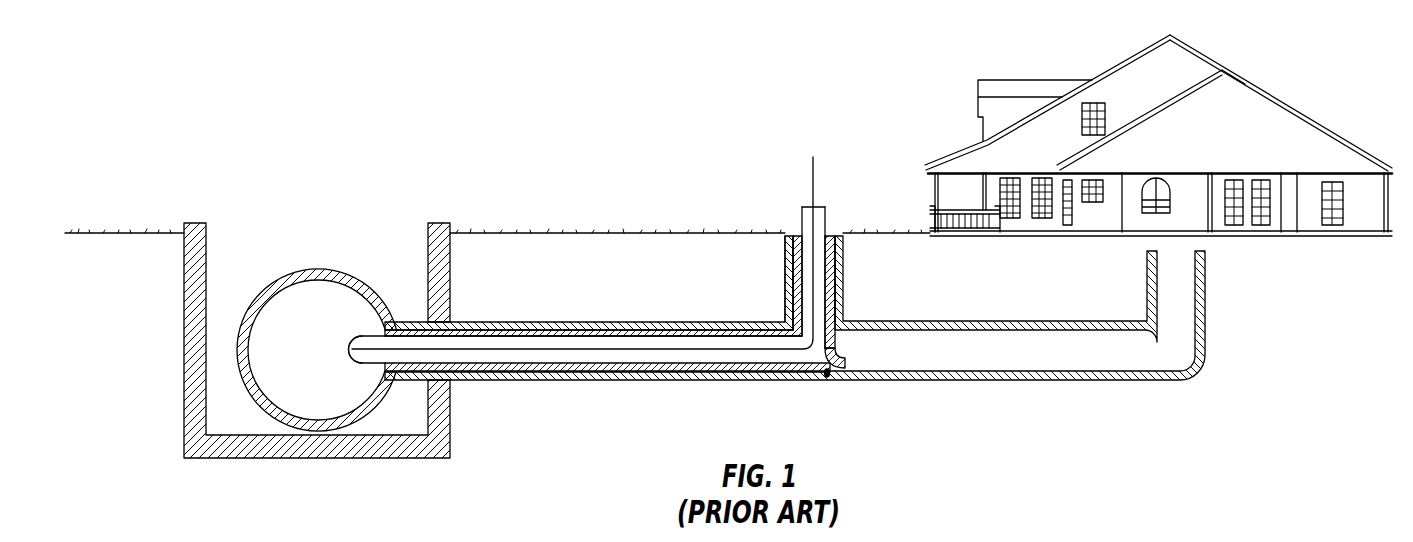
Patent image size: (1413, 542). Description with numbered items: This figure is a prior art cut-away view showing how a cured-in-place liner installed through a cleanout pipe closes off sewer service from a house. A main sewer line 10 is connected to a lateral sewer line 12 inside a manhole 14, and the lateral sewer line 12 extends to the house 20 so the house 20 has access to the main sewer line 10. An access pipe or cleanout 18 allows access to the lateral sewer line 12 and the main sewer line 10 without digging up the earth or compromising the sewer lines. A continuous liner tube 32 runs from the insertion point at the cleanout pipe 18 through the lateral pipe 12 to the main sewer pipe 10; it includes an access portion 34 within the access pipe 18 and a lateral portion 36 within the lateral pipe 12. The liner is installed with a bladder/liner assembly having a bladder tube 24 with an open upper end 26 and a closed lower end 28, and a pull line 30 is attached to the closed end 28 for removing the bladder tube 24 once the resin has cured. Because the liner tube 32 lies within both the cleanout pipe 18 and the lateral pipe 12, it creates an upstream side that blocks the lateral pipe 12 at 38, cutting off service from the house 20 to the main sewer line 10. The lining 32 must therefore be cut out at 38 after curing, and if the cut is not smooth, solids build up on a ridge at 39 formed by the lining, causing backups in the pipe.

The main sewer line 10 is at (307, 268).
The lateral sewer line 12 is at (684, 322).
The manhole 14 is at (208, 257).
The access pipe/cleanout 18 is at (785, 297).
The house 20 is at (1088, 46).
The bladder tube 24 is at (800, 218).
The open end of the bladder tube 26 is at (820, 205).
The closed end of the bladder tube 28 is at (352, 340).
The pull line 30 is at (620, 347).
The liner tube 32 is at (713, 333).
The access portion of the liner tube 34 is at (798, 288).
The lateral portion of the liner tube 36 is at (603, 349).
The blocked location of the lateral pipe 38 is at (832, 357).
The ridge 39 is at (830, 380).